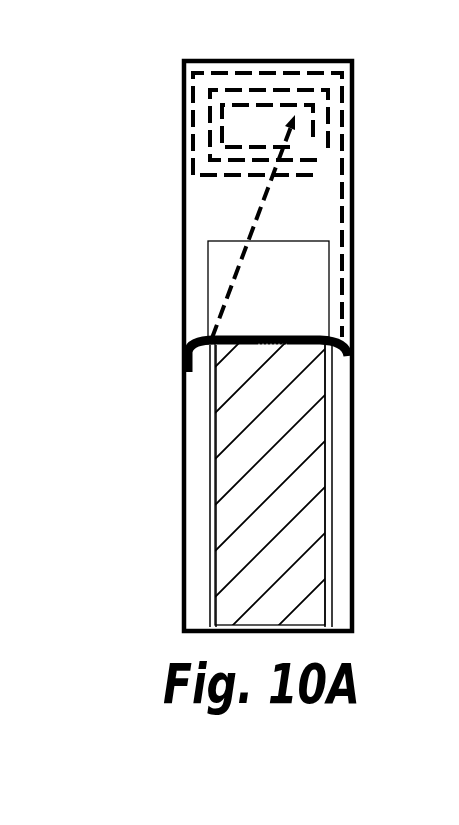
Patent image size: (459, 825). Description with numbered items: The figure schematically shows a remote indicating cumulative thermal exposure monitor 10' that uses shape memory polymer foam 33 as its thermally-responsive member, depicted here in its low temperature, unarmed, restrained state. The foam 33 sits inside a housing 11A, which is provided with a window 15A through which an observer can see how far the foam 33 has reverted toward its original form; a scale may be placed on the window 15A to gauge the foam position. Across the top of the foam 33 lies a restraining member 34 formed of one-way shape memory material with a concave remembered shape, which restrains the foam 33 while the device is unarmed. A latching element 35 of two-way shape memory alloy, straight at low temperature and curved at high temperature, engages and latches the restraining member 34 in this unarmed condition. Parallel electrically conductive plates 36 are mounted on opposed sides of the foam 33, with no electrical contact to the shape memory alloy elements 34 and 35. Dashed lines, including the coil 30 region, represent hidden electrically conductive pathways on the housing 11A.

The remote indicating cumulative thermal exposure monitor 10' is at (239, 396).
The housing 11A is at (183, 208).
The antenna coil 30 is at (176, 86).
The window 15A is at (208, 248).
The latching element 35 is at (186, 337).
The restraining member 34 is at (268, 334).
The shape memory polymer foam 33 is at (237, 462).
The electrically conductive plates 36 is at (210, 527).